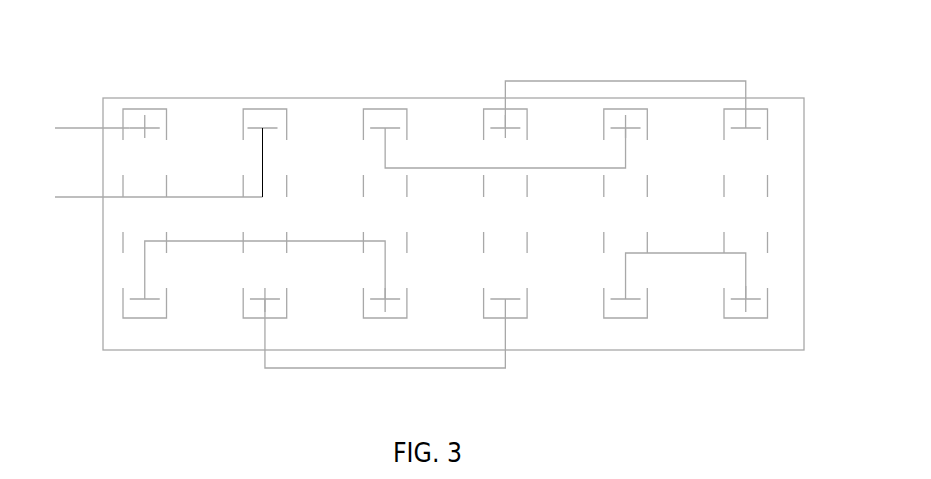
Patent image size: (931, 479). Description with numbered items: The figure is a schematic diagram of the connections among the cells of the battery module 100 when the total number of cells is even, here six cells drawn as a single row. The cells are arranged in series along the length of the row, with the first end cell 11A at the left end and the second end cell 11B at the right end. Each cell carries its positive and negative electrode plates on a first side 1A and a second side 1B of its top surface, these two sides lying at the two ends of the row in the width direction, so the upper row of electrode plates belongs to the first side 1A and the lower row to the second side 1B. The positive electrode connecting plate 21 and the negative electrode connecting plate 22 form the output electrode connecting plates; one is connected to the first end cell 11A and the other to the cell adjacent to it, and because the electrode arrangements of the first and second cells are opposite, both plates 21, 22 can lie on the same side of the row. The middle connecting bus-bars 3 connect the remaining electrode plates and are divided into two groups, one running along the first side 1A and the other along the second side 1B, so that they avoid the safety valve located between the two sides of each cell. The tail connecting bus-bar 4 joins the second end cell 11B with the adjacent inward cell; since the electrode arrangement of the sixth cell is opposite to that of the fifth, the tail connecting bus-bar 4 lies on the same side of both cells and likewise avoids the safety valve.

The battery module 100 is at (65, 33).
The first side 1A is at (413, 146).
The second side 1B is at (486, 348).
The first end cell 11A is at (153, 117).
The second end cell 11B is at (757, 312).
The positive electrode connecting plate 21 is at (87, 128).
The negative electrode connecting plate 22 is at (79, 198).
The middle connecting bus-bar 3 is at (455, 168).
The tail connecting bus-bar 4 is at (685, 253).